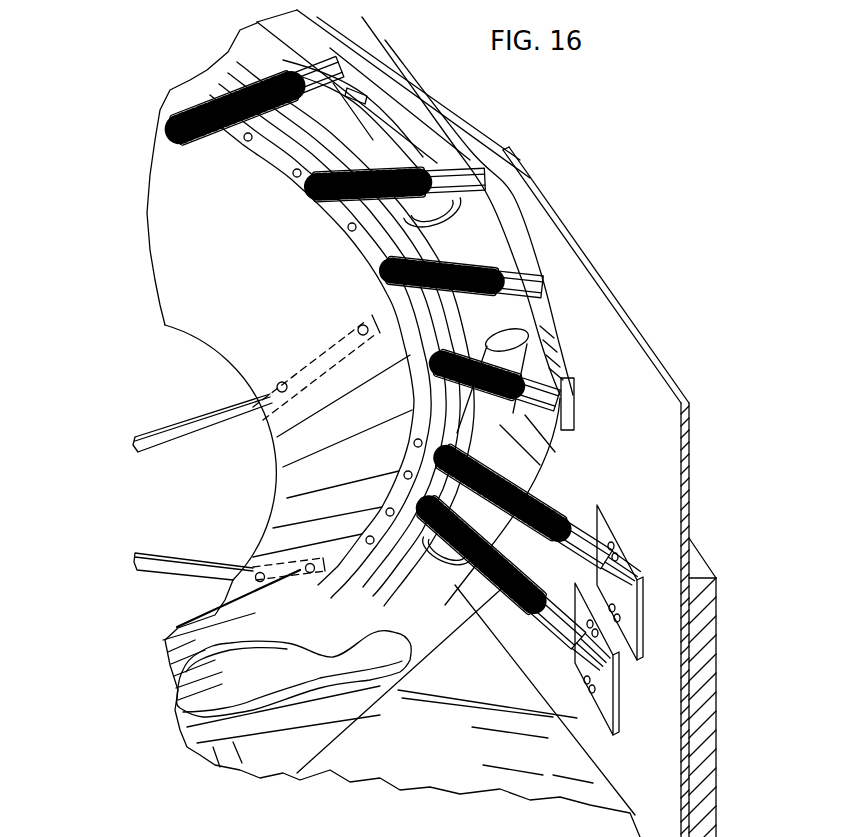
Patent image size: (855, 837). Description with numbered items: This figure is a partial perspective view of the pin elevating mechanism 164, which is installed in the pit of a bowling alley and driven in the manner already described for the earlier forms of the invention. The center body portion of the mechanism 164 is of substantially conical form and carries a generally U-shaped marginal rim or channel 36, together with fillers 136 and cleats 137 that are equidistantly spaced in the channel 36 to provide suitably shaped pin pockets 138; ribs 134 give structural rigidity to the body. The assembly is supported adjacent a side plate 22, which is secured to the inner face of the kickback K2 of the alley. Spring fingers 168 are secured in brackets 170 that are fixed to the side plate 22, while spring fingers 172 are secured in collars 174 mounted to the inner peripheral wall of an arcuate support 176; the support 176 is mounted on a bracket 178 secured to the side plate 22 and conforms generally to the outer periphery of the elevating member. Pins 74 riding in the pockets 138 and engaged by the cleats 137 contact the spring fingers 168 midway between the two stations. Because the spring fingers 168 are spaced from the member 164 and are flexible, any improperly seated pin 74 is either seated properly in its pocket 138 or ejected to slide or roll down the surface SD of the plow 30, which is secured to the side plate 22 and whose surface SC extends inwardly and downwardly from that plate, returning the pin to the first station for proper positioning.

The side plate 22 is at (685, 472).
The plow 30 is at (440, 787).
The channel 36 is at (432, 96).
The pin 74 is at (448, 223).
The rib 134 is at (215, 417).
The filler 136 is at (407, 233).
The cleat 137 is at (350, 88).
The pin pocket 138 is at (443, 333).
The pin elevating mechanism 164 is at (140, 265).
The spring finger 168 is at (170, 327).
The bracket 170 is at (610, 527).
The spring finger 172 is at (188, 152).
The collar 174 is at (295, 95).
The support 176 is at (256, 33).
The bracket 178 is at (574, 415).
The kickback K2 is at (703, 710).
The surface of plow SD is at (294, 762).
The surface of plow SC is at (409, 777).